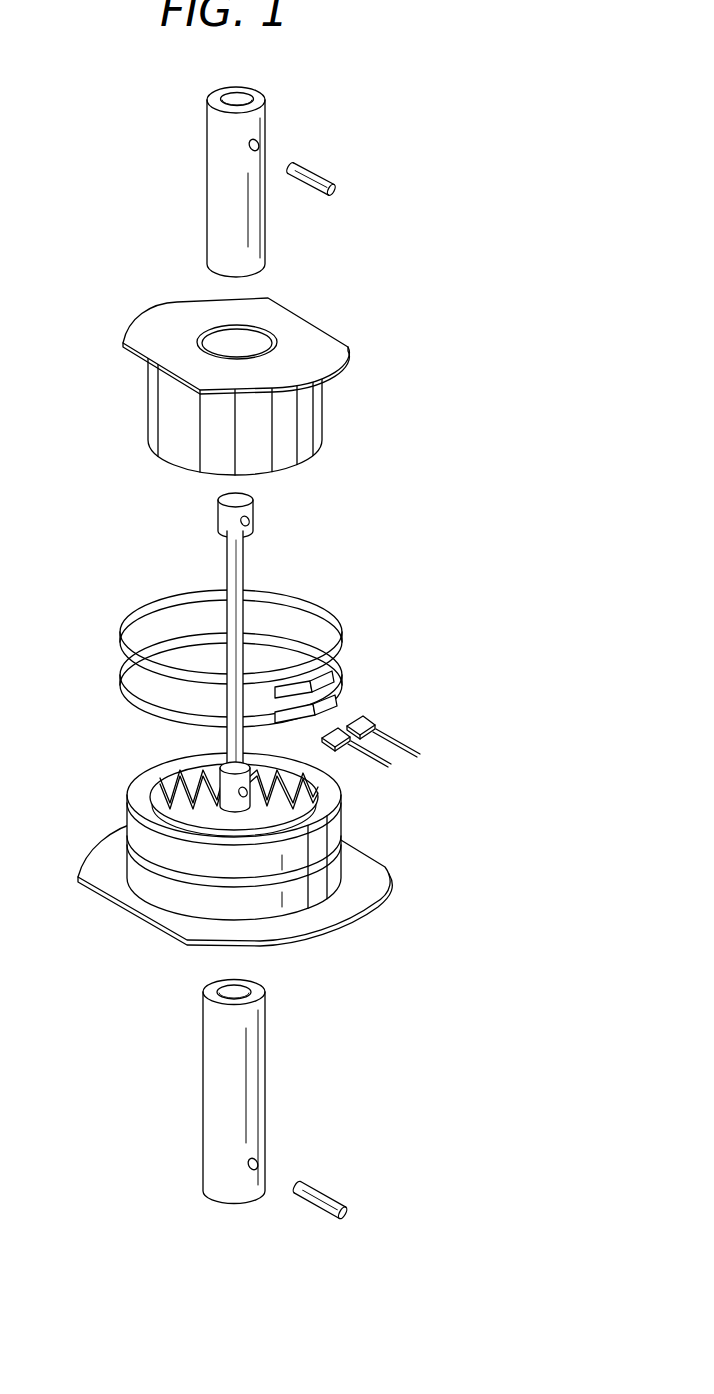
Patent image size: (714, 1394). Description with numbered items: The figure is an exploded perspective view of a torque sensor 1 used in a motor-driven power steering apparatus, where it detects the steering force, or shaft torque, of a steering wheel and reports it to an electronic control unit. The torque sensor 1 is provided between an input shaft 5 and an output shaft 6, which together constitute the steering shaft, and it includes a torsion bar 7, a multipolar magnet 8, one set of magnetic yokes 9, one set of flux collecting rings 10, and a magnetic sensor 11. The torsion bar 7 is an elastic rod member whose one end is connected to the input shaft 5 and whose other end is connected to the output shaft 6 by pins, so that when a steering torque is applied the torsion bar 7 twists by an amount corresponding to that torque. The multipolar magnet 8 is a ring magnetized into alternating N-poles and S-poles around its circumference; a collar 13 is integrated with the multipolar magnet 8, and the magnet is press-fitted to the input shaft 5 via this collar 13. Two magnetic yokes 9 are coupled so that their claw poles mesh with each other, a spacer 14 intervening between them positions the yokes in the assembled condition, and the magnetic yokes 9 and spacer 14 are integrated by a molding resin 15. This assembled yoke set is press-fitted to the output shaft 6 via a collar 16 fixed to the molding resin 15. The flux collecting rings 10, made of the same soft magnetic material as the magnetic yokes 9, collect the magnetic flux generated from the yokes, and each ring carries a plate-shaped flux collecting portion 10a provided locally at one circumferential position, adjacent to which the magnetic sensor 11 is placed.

The torque sensor 1 is at (406, 295).
The input shaft 5 is at (216, 184).
The output shaft 6 is at (215, 1092).
The torsion bar 7 is at (243, 562).
The multipolar magnet 8 is at (320, 412).
The magnetic yokes 9 is at (239, 851).
The flux collecting rings 10 is at (120, 685).
The flux collecting portion 10a is at (355, 690).
The magnetic sensor 11 is at (373, 727).
The collar 13 is at (301, 331).
The spacer 14 is at (331, 829).
The molding resin 15 is at (167, 898).
The collar 16 is at (377, 883).